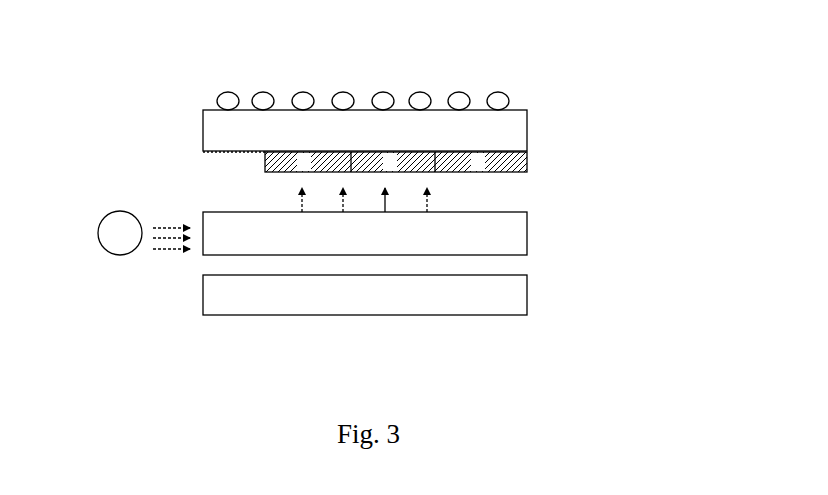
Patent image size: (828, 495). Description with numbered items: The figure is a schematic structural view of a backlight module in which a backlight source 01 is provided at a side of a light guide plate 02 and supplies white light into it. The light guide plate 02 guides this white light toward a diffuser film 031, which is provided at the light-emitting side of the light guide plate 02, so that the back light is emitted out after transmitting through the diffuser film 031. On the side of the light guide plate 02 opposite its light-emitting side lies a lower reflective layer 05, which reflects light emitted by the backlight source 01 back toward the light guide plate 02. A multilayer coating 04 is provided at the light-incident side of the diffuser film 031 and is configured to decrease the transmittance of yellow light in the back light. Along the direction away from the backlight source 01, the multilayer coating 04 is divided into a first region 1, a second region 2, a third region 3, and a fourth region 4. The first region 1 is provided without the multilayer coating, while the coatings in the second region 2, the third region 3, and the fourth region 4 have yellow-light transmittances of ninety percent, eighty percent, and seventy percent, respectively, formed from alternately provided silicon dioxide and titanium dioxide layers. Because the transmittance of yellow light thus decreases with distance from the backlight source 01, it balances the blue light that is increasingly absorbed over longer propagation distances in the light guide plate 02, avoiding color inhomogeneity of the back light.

The backlight source 01 is at (105, 220).
The light guide plate 02 is at (527, 242).
The diffuser film 031 is at (527, 125).
The multilayer coating 04 is at (527, 155).
The lower reflective layer 05 is at (527, 297).
The first region 1 is at (234, 160).
The second region 2 is at (304, 162).
The third region 3 is at (390, 162).
The fourth region 4 is at (478, 162).